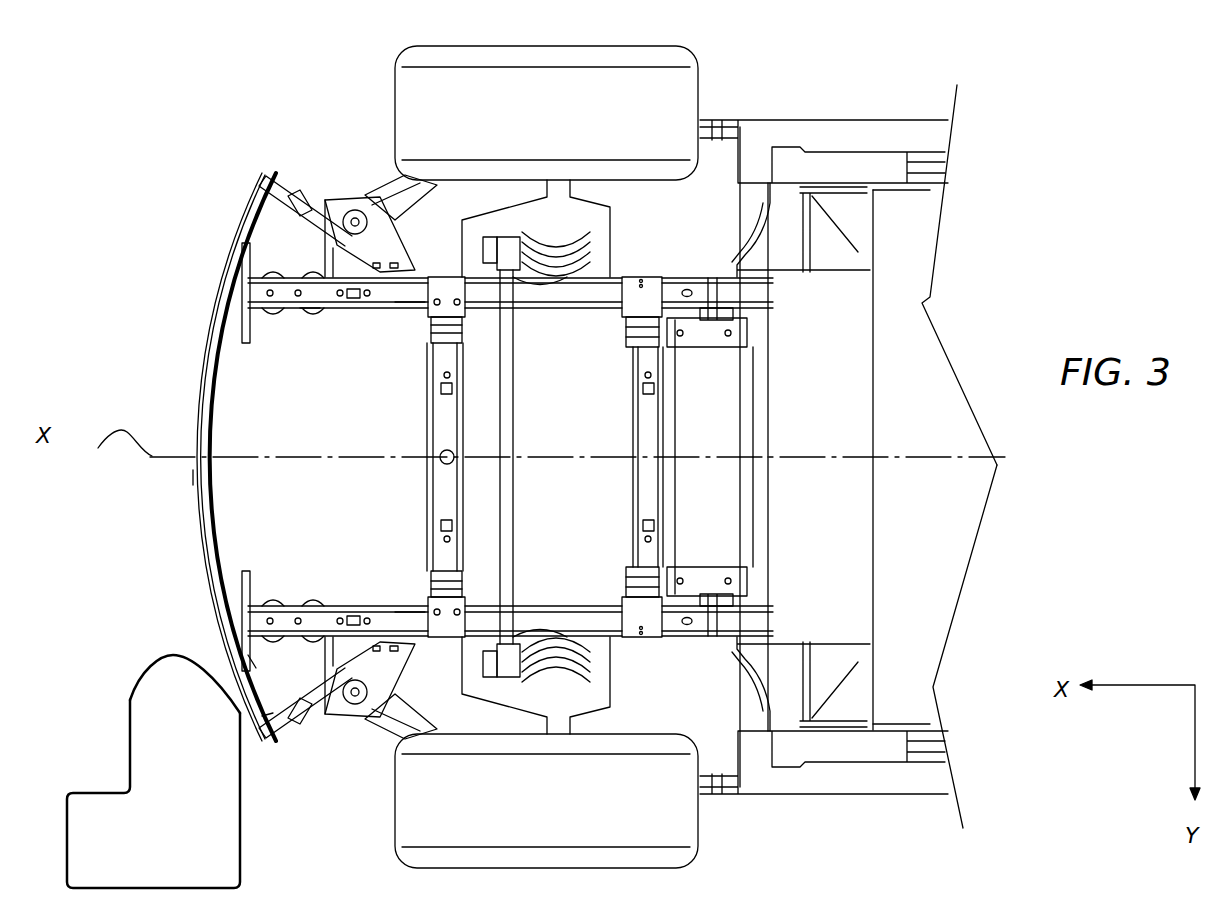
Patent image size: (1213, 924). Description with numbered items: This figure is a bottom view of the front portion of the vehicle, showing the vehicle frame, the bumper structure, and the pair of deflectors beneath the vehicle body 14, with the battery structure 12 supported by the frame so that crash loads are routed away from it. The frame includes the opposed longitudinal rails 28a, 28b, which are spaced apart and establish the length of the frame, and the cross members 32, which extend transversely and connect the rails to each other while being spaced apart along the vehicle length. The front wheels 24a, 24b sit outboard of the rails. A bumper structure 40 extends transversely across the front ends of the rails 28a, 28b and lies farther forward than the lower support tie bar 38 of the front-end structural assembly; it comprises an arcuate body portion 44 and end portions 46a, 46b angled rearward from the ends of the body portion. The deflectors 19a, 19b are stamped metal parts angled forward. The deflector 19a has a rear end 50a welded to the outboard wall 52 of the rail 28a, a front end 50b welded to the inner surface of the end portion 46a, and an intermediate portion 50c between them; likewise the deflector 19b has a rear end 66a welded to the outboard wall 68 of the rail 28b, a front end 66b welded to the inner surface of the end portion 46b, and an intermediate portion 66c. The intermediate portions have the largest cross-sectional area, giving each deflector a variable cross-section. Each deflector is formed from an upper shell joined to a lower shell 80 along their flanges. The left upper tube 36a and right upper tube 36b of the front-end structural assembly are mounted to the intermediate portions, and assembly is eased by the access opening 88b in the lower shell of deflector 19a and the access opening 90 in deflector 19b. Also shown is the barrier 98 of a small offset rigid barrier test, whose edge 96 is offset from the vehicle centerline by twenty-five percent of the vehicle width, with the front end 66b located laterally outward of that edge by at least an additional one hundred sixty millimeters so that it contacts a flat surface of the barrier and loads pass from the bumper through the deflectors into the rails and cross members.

The battery structure 12 is at (930, 567).
The vehicle body 14 is at (890, 79).
The deflector 19a is at (307, 203).
The deflector 19b is at (313, 707).
The front wheel 24a is at (655, 95).
The front wheel 24b is at (650, 820).
The longitudinal rail 28a is at (293, 288).
The longitudinal rail 28b is at (300, 620).
The cross members 32 is at (446, 556).
The left upper tube 36a is at (390, 190).
The right upper tube 36b is at (392, 732).
The lower support tie bar 38 is at (298, 488).
The bumper structure 40 is at (186, 412).
The arcuate body portion 44 is at (193, 477).
The end portion 46a is at (258, 218).
The end portion 46b is at (245, 735).
The rear end 50a is at (400, 300).
The front end 50b is at (252, 177).
The intermediate portion 50c is at (307, 312).
The outboard wall 52 is at (443, 277).
The rear end 66a is at (400, 628).
The front end 66b is at (273, 713).
The intermediate portion 66c is at (350, 667).
The outboard wall 68 is at (250, 660).
The lower shell 80 is at (355, 210).
The access opening 88b is at (347, 213).
The access opening 90 is at (390, 730).
The edge 96 is at (183, 657).
The barrier 98 is at (112, 785).